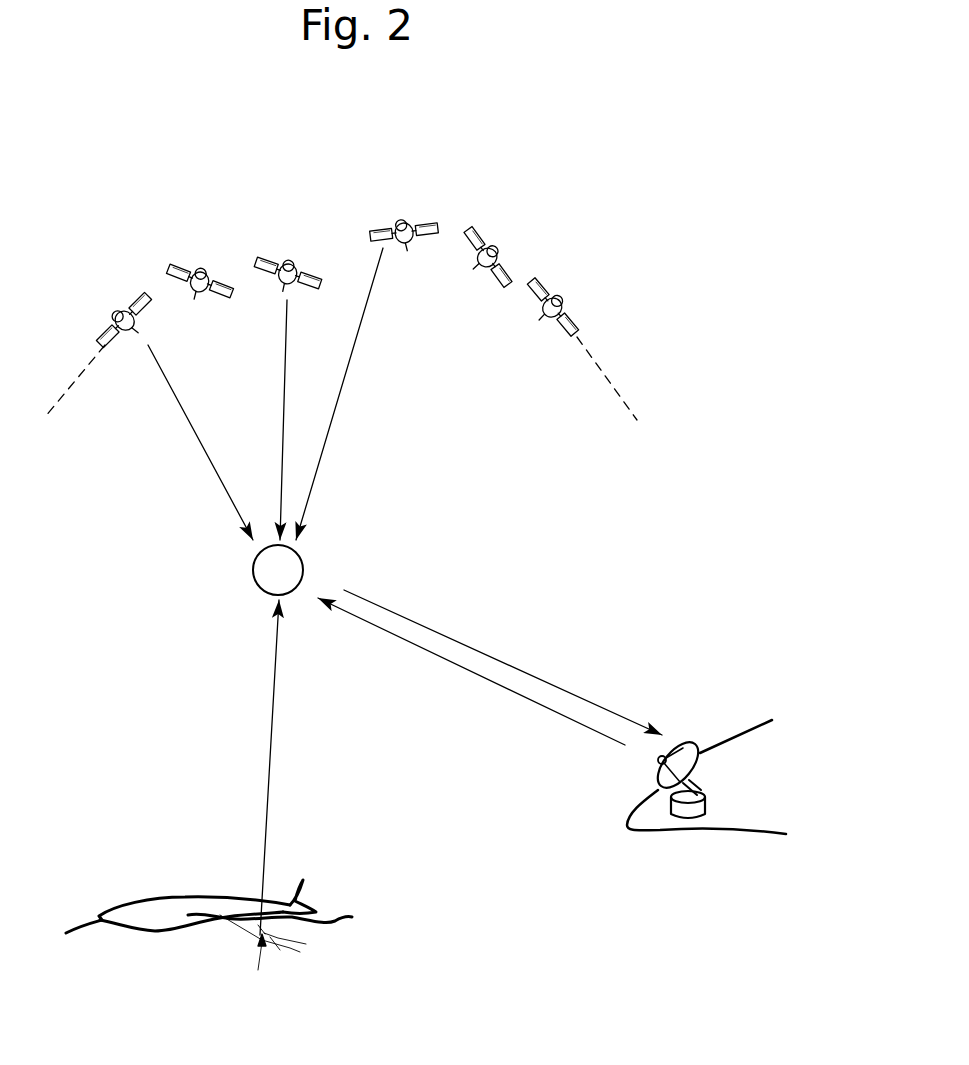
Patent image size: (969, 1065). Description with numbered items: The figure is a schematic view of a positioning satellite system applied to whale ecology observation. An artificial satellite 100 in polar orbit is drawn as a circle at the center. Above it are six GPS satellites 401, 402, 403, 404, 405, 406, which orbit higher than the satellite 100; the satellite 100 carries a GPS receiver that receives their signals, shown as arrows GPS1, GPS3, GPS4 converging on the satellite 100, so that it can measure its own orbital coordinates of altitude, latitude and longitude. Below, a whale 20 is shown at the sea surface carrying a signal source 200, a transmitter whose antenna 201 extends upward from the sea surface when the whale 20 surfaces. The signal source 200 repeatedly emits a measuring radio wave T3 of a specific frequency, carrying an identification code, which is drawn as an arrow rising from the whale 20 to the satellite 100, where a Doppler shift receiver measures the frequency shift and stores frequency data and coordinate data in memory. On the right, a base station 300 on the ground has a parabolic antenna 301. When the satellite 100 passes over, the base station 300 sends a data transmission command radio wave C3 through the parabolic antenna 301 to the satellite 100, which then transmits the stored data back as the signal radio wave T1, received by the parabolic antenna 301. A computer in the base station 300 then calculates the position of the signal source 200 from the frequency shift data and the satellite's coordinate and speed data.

The whale 20 is at (148, 915).
The artificial satellite 100 is at (262, 585).
The signal source 200 is at (258, 946).
The antenna 201 is at (290, 935).
The base station 300 is at (726, 746).
The parabolic antenna 301 is at (690, 745).
The GPS satellite 401 is at (110, 300).
The GPS satellite 402 is at (198, 266).
The GPS satellite 403 is at (312, 270).
The GPS satellite 404 is at (412, 210).
The GPS satellite 405 is at (503, 240).
The GPS satellite 406 is at (568, 295).
The GPS signal from satellite 401 GPS1 is at (178, 410).
The GPS signal from satellite 403 GPS3 is at (287, 338).
The GPS signal from satellite 404 GPS4 is at (345, 395).
The signal radio wave T1 is at (622, 718).
The measuring radio wave T3 is at (270, 787).
The data transmission command radio wave C3 is at (606, 738).